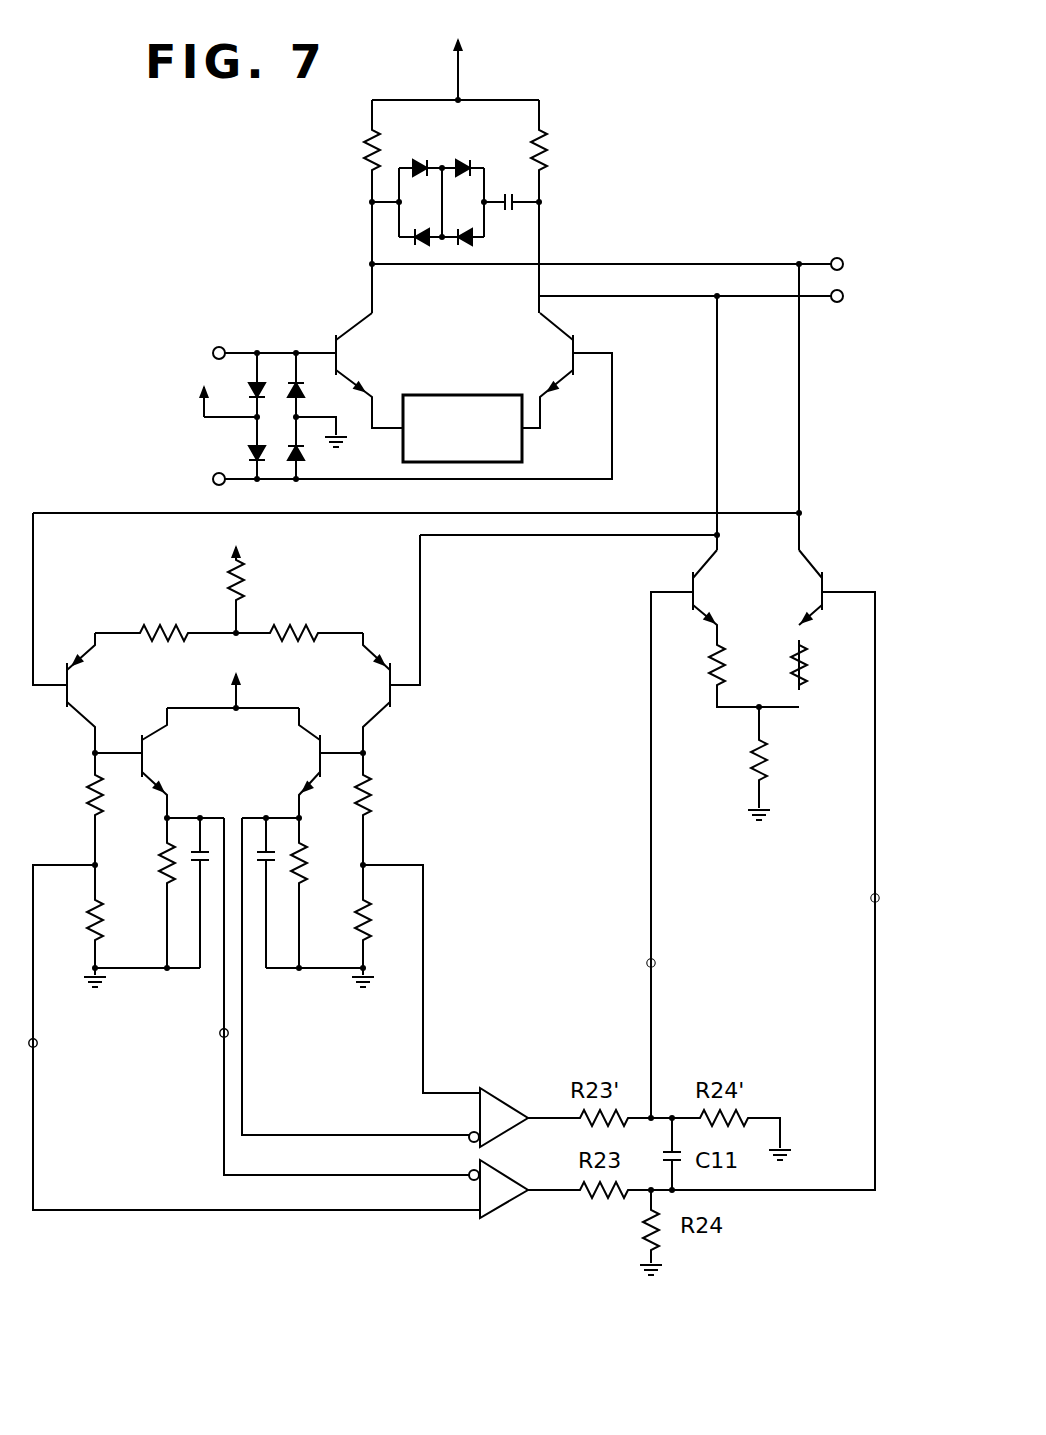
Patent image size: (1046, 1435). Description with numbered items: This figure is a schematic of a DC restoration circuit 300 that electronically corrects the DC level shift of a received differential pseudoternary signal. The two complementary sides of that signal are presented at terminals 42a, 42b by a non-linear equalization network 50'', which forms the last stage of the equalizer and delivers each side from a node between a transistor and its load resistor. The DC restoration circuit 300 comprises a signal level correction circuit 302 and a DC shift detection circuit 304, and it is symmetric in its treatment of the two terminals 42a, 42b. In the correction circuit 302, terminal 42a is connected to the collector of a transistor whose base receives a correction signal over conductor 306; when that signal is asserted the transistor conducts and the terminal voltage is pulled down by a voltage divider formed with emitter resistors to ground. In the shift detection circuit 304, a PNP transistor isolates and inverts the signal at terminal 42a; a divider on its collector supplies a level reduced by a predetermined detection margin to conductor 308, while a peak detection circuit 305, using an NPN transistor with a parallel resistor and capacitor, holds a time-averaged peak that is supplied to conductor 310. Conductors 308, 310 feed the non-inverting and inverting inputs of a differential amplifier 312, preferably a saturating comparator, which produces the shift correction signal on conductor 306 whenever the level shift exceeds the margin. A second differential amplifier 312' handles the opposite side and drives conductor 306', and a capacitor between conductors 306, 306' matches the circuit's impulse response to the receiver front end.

The terminal 42a is at (855, 250).
The terminal 42b is at (842, 301).
The non-linear equalization network 50'' is at (397, 245).
The DC restoration circuit 300 is at (501, 660).
The signal level correction circuit 302 is at (818, 563).
The DC shift detection circuit 304 is at (306, 589).
The peak detection circuit 305 is at (181, 791).
The conductor 306 is at (775, 891).
The conductor 306' is at (686, 855).
The conductor 308 is at (37, 1046).
The conductor 310 is at (220, 1033).
The differential amplifier 312 is at (513, 1181).
The differential amplifier 312' is at (517, 1108).